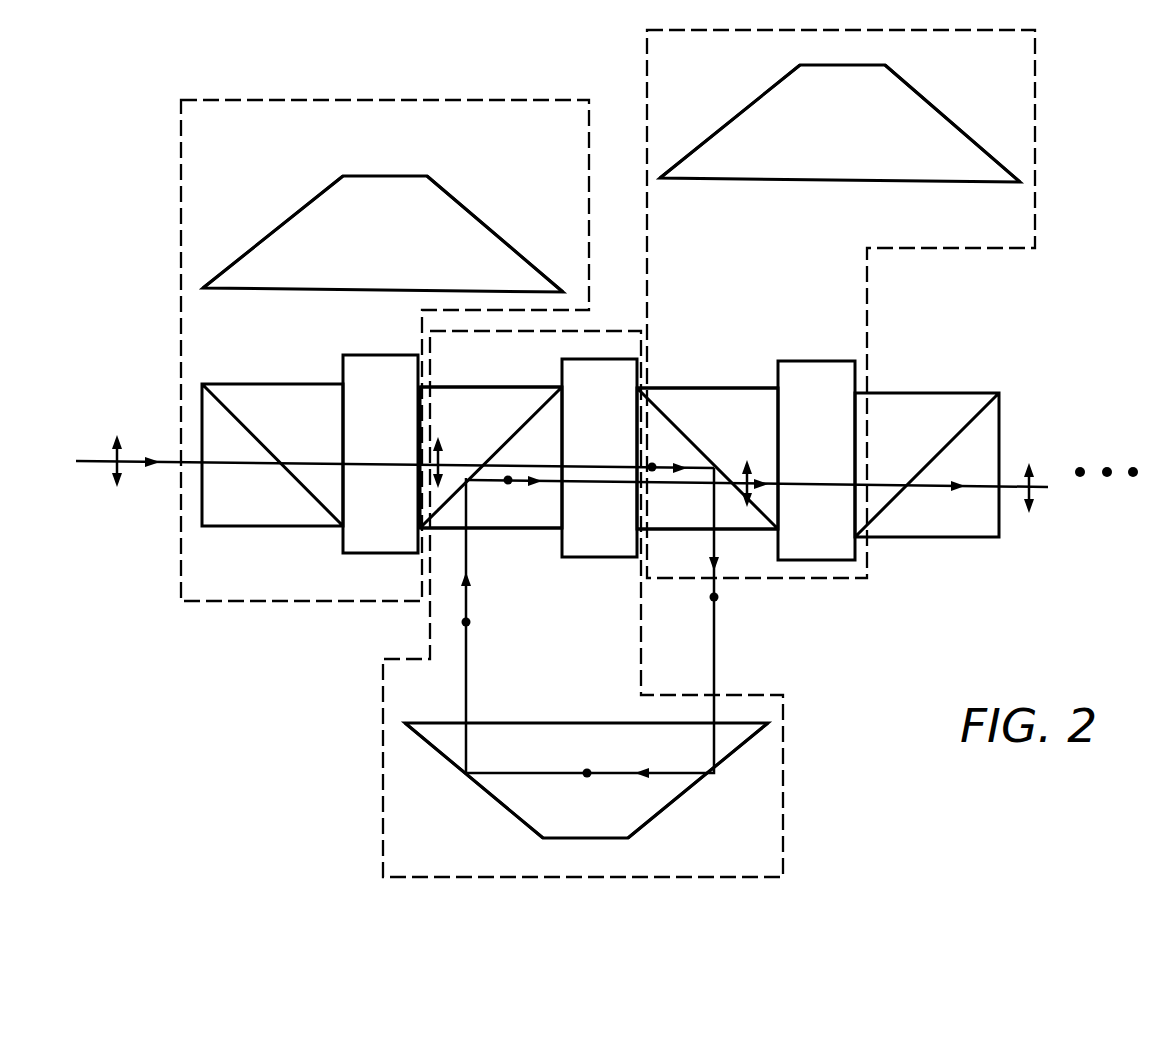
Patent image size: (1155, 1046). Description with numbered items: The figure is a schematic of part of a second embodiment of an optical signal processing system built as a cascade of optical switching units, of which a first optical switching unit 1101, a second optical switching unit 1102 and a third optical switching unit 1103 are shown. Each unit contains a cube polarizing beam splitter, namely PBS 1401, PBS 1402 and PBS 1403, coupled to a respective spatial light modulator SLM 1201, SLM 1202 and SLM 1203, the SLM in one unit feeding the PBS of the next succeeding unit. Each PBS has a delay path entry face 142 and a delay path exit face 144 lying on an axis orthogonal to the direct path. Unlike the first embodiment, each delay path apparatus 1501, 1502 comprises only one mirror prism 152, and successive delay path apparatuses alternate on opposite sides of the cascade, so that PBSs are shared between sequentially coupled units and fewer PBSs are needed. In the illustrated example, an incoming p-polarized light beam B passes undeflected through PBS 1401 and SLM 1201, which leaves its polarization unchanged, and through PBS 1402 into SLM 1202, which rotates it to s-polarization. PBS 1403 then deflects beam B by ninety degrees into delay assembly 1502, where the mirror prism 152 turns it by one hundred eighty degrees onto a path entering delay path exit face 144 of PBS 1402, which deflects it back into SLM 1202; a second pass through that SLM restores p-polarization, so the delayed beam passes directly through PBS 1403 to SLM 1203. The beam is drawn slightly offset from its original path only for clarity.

The first optical switching unit 1101 is at (240, 100).
The second optical switching unit 1102 is at (383, 792).
The third optical switching unit 1103 is at (650, 50).
The first spatial light modulator 1201 is at (360, 553).
The second spatial light modulator 1202 is at (642, 372).
The third spatial light modulator 1203 is at (858, 377).
The first polarizing beam splitter 1401 is at (262, 395).
The second polarizing beam splitter 1402 is at (462, 398).
The third polarizing beam splitter 1403 is at (982, 358).
The delay path entry face 142 is at (502, 388).
The delay path exit face 144 is at (498, 528).
The first delay path apparatus 1501 is at (308, 198).
The second delay path apparatus 1502 is at (687, 820).
The mirror prism 152 is at (460, 203).
The light beam B is at (113, 460).